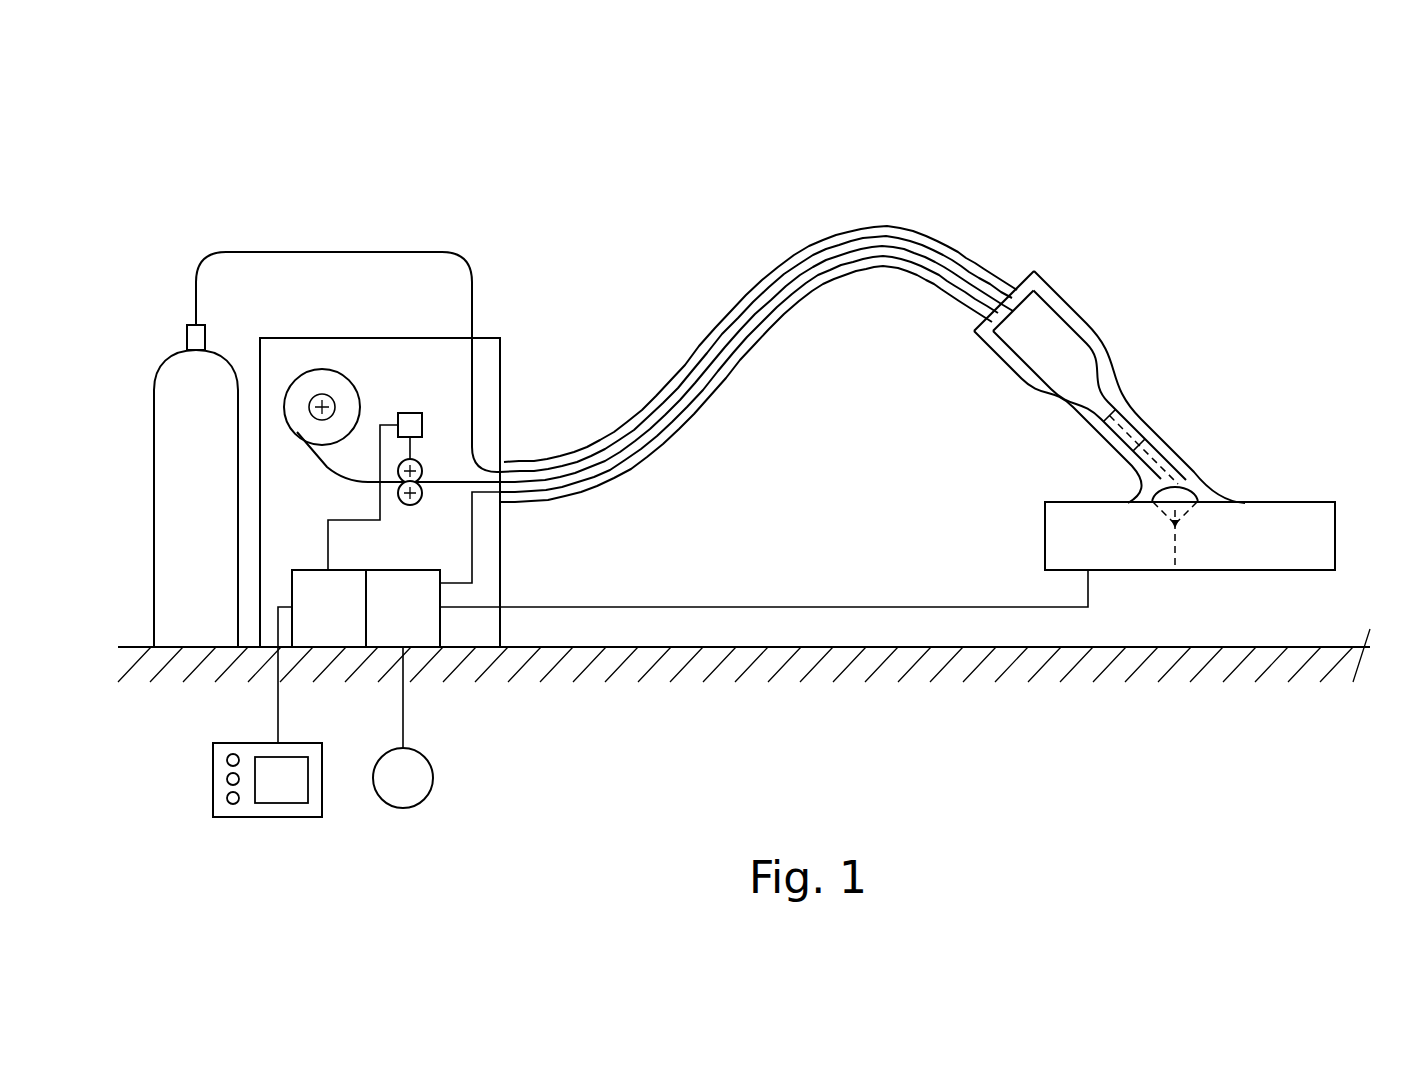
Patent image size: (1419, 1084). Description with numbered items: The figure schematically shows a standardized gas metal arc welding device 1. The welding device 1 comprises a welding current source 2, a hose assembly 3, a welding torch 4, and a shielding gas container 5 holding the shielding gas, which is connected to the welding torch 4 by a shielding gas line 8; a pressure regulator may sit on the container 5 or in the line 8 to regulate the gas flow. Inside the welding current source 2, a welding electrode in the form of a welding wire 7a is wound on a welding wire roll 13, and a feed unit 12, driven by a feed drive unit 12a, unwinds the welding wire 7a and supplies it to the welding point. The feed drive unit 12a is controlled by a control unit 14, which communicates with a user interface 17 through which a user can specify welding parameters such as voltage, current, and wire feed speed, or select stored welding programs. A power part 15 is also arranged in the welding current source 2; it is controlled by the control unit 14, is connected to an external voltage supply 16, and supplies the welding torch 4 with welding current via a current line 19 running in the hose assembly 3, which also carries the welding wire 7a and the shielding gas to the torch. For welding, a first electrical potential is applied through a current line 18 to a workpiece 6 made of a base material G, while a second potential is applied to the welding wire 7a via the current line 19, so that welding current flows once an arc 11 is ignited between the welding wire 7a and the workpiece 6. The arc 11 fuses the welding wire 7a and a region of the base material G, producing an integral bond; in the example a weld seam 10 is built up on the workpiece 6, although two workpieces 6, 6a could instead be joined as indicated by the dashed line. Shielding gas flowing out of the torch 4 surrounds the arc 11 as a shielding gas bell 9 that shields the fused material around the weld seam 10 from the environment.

The gas metal arc welding device 1 is at (380, 178).
The welding current source 2 is at (505, 343).
The hose assembly 3 is at (740, 277).
The welding torch 4 is at (1110, 276).
The shielding gas container 5 is at (186, 493).
The workpiece 6 is at (1273, 547).
The second workpiece 6a is at (1086, 547).
The welding wire 7a is at (327, 468).
The shielding gas line 8 is at (272, 252).
The shielding gas bell 9 is at (1163, 452).
The weld seam 10 is at (1177, 497).
The arc 11 is at (1142, 472).
The feed unit 12 is at (435, 503).
The feed drive unit 12a is at (408, 420).
The welding wire roll 13 is at (312, 385).
The control unit 14 is at (316, 617).
The power part 15 is at (390, 617).
The external voltage supply 16 is at (433, 785).
The user interface 17 is at (213, 778).
The current line 18 is at (750, 605).
The current line 19 is at (1030, 347).
The base material G is at (1322, 570).